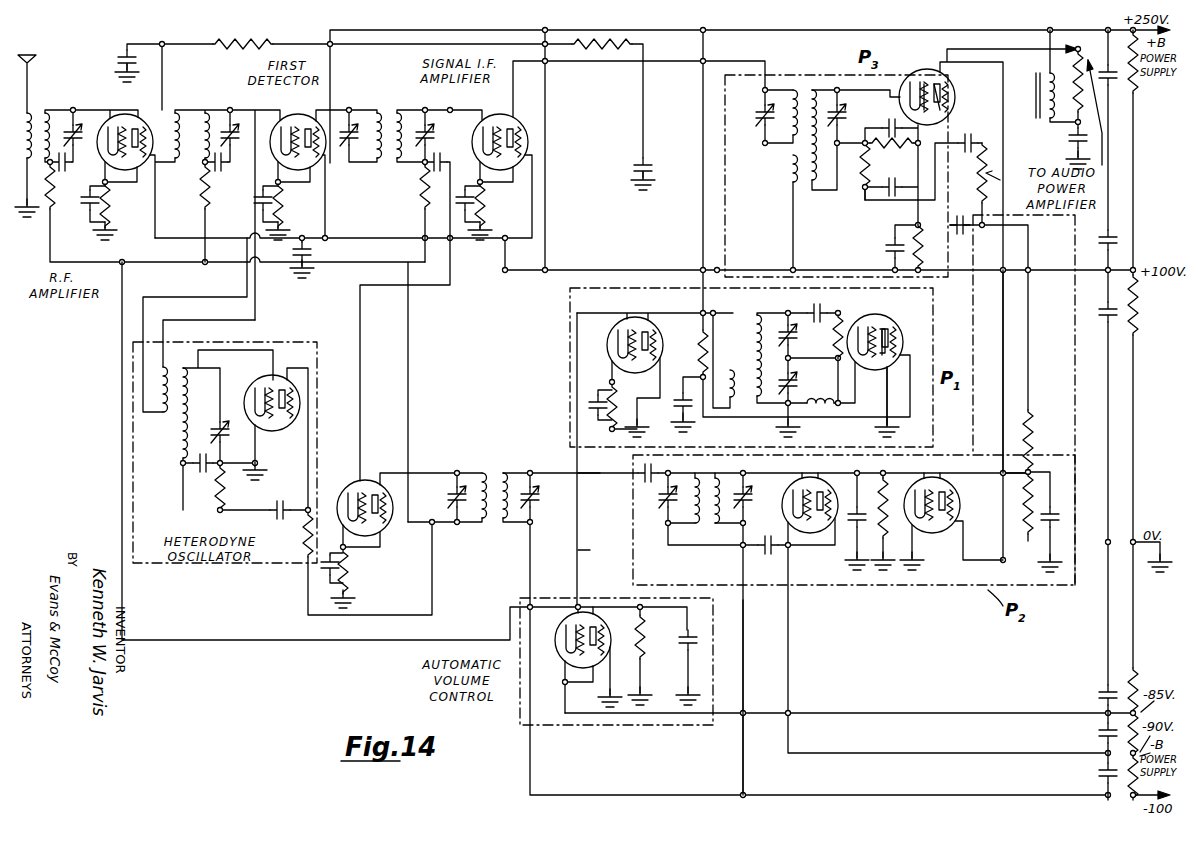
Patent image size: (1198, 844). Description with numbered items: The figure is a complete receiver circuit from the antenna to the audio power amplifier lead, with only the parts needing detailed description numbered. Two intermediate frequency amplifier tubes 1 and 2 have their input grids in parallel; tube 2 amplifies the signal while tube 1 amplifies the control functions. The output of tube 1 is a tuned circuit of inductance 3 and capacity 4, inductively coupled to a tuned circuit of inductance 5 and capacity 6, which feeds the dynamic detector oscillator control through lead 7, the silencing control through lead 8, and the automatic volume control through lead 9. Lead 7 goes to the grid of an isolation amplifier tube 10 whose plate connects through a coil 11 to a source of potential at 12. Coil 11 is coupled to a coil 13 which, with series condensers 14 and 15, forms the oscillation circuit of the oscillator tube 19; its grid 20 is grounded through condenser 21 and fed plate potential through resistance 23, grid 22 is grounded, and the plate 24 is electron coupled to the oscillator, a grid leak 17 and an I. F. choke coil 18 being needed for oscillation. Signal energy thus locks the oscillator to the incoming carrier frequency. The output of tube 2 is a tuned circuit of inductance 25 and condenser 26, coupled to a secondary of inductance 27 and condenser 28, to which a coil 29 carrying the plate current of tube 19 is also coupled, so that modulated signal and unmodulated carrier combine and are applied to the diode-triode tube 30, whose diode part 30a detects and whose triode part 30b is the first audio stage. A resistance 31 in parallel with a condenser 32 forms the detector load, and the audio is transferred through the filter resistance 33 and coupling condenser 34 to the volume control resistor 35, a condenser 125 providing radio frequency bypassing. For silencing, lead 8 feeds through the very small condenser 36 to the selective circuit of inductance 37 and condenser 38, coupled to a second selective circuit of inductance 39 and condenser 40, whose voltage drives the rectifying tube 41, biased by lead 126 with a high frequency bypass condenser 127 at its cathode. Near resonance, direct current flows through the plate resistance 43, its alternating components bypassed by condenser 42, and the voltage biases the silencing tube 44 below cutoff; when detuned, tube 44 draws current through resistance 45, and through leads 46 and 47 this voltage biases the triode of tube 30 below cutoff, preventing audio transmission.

The control intermediate frequency amplifier tube 1 is at (352, 482).
The signal intermediate frequency amplifier tube 2 is at (517, 121).
The inductance 3 is at (490, 474).
The capacity 4 is at (452, 492).
The inductance 5 is at (503, 523).
The capacity 6 is at (534, 504).
The lead 7 is at (580, 350).
The lead 8 is at (600, 473).
The lead 9 is at (580, 550).
The isolation amplifier tube 10 is at (645, 318).
The coil 11 is at (731, 370).
The source of potential 12 is at (745, 270).
The coil 13 is at (757, 314).
The condenser 14 is at (797, 340).
The condenser 15 is at (797, 381).
The grid leak 17 is at (818, 320).
The I. F. choke coil 18 is at (820, 392).
The oscillator tube 19 is at (866, 377).
The grid 20 is at (869, 318).
The condenser 21 is at (680, 406).
The grid 22 is at (886, 335).
The resistance 23 is at (700, 377).
The plate 24 is at (883, 322).
The inductance 25 is at (795, 88).
The condenser 26 is at (762, 113).
The inductance 27 is at (815, 88).
The condenser 28 is at (848, 111).
The coil 29 is at (790, 182).
The diode-triode tube 30 is at (922, 70).
The diode part 30a is at (931, 128).
The triode part 30b is at (953, 92).
The resistance 31 is at (876, 165).
The condenser 32 is at (891, 125).
The filter resistance 33 is at (864, 196).
The coupling condenser 34 is at (972, 138).
The volume control resistor 35 is at (988, 196).
The condenser 36 is at (660, 471).
The inductance 37 is at (708, 478).
The condenser 38 is at (664, 512).
The inductance 39 is at (710, 526).
The condenser 40 is at (750, 505).
The rectifying tube 41 is at (816, 478).
The condenser 42 is at (857, 530).
The plate resistance 43 is at (884, 535).
The silencing tube 44 is at (940, 478).
The resistance 45 is at (1030, 558).
The lead 46 is at (1031, 410).
The lead 47 is at (1003, 356).
The condenser 125 is at (889, 187).
The lead 126 is at (745, 678).
The high frequency bypass condenser 127 is at (767, 553).